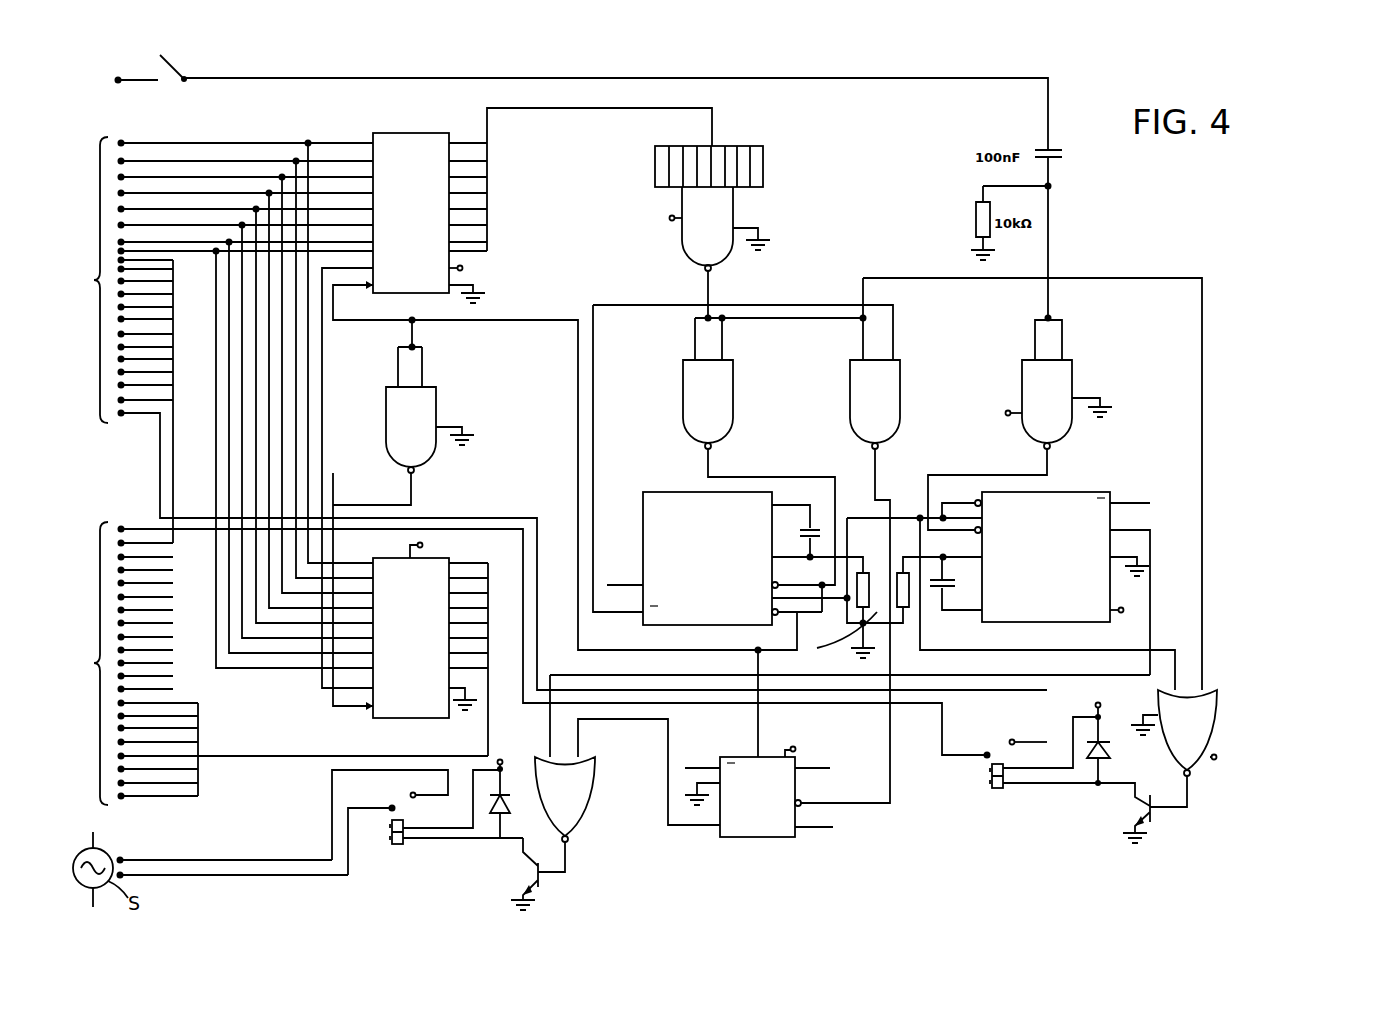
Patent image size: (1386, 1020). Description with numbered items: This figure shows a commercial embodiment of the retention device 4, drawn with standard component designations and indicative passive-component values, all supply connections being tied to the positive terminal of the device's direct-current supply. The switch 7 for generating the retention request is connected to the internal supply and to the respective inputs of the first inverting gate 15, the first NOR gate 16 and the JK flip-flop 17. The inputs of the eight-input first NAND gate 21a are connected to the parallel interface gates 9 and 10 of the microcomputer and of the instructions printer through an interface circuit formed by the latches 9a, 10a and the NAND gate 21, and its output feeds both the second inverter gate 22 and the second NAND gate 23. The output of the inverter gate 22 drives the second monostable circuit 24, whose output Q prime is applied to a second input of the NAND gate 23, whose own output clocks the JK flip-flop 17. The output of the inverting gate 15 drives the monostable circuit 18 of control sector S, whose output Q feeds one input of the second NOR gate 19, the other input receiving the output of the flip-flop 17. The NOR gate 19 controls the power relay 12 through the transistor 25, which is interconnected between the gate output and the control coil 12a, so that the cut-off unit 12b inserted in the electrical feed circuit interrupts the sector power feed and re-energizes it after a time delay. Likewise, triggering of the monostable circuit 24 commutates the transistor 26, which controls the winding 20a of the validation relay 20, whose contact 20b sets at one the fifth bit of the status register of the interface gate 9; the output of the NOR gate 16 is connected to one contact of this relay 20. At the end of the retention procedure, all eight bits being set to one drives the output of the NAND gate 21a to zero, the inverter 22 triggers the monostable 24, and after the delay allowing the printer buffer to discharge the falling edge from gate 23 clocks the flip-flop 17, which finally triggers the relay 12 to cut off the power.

The retention device 4 is at (840, 70).
The switch 7 is at (187, 88).
The parallel interface gate of the microcomputer 9 is at (557, 413).
The interface circuit 9a is at (428, 133).
The parallel interface gate of the instructions printer 10 is at (522, 663).
The interface circuit 10a is at (374, 718).
The power relay 12 is at (418, 844).
The control coil of the power relay 12a is at (397, 845).
The cut-off unit of the power relay 12b is at (396, 802).
The first inverting logic gate 15 is at (1021, 372).
The first NOR logic gate 16 is at (1217, 728).
The JK flip-flop 17 is at (795, 840).
The monostable circuit 18 is at (1093, 492).
The second NOR logic gate 19 is at (587, 812).
The validation relay for the retention request 20 is at (970, 768).
The winding of the validation relay 20a is at (998, 790).
The contact of the validation relay 20b is at (985, 744).
The interface circuit NAND gate 21 is at (386, 400).
The first NAND logic gate 21a is at (685, 257).
The second inverter gate 22 is at (683, 418).
The second NAND gate 23 is at (850, 436).
The second monostable circuit 24 is at (643, 510).
The transistor 25 is at (548, 892).
The transistor 26 is at (1152, 820).